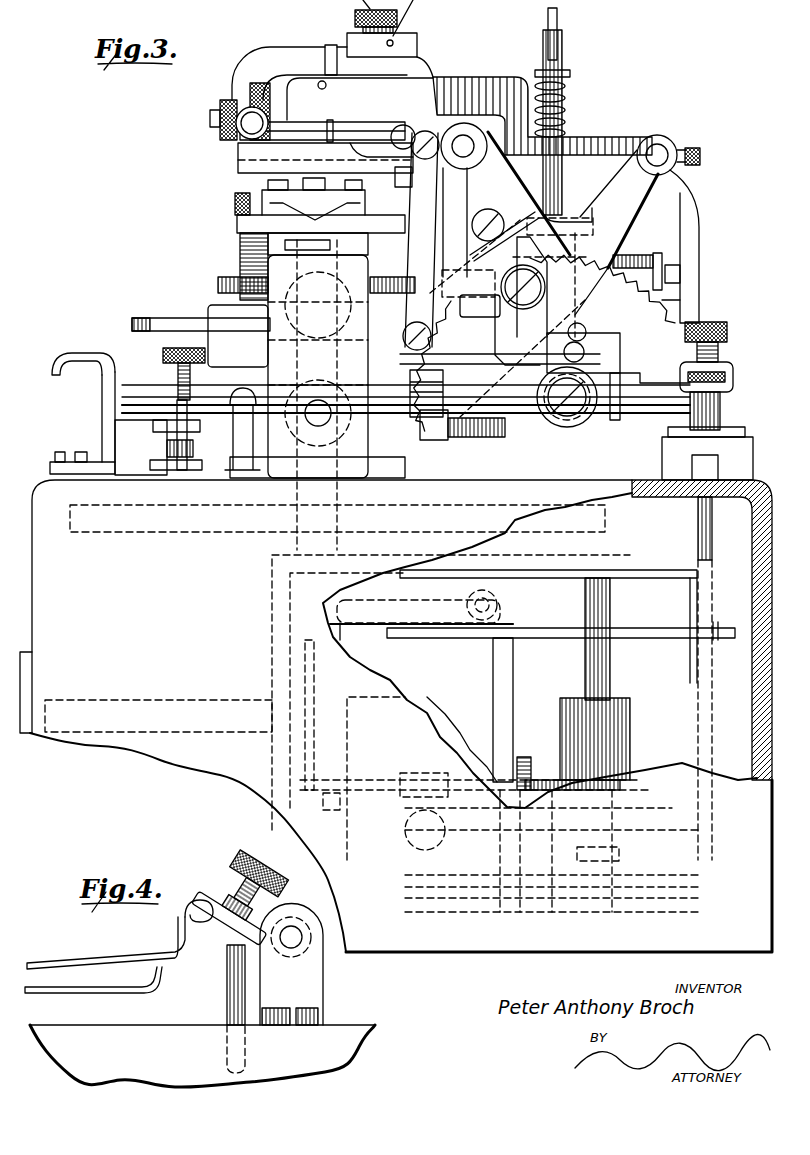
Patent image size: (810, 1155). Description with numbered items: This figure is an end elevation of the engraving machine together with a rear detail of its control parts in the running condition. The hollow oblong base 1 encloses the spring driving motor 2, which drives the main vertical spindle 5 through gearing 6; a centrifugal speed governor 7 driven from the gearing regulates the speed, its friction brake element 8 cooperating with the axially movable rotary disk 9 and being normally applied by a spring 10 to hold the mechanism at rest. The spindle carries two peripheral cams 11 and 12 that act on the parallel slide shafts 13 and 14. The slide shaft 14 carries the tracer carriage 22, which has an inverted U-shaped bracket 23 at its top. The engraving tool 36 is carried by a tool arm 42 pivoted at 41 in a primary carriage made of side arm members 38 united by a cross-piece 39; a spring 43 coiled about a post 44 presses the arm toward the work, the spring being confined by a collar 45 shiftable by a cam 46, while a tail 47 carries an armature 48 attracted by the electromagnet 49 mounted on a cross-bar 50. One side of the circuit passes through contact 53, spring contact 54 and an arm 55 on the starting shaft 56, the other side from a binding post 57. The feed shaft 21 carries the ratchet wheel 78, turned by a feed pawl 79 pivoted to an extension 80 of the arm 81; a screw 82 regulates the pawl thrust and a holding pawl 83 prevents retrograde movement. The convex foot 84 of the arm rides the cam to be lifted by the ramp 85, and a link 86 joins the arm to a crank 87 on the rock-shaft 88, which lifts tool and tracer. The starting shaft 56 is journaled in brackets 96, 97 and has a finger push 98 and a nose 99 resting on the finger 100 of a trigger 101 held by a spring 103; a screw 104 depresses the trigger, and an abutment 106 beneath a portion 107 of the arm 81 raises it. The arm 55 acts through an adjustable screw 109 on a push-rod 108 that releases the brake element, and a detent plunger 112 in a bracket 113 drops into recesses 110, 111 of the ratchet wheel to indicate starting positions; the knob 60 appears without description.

In FIG. 3, the hollow oblong base 1 is at (515, 953).
In FIG. 4, the hollow oblong base 1 is at (78, 1030).
In FIG. 3, the spring driving motor 2 is at (615, 742).
In FIG. 3, the main vertical spindle 5 is at (292, 498).
In FIG. 3, the gearing 6 is at (562, 572).
In FIG. 3, the centrifugal speed governor 7 is at (412, 840).
In FIG. 3, the friction brake element 8 is at (505, 760).
In FIG. 3, the axially movable rotary disk 9 is at (524, 758).
In FIG. 3, the spring 10 is at (382, 603).
In FIG. 3, the peripheral cam 11 is at (148, 318).
In FIG. 3, the peripheral cam 12 is at (490, 440).
In FIG. 3, the slide shaft 13 is at (240, 270).
In FIG. 3, the slide shaft 14 is at (318, 490).
In FIG. 3, the feed shaft 21 is at (568, 428).
In FIG. 3, the tracer carriage 22 is at (410, 196).
In FIG. 3, the inverted U-shaped bracket 23 is at (278, 48).
In FIG. 3, the engraving or cutting tool 36 is at (345, 122).
In FIG. 3, the side arm members 38 is at (660, 222).
In FIG. 3, the cross-piece 39 is at (592, 228).
In FIG. 3, the pivot of tool arm 41 is at (660, 145).
In FIG. 3, the tool arm 42 is at (452, 78).
In FIG. 3, the spring 43 is at (565, 96).
In FIG. 3, the post 44 is at (562, 55).
In FIG. 3, the collar 45 is at (540, 70).
In FIG. 3, the cam 46 is at (546, 38).
In FIG. 3, the tail 47 is at (700, 248).
In FIG. 3, the armature 48 is at (682, 284).
In FIG. 3, the electromagnet 49 is at (640, 256).
In FIG. 3, the cross-bar 50 is at (480, 307).
In FIG. 4, the contact 53 is at (143, 987).
In FIG. 3, the spring contact 54 is at (722, 422).
In FIG. 4, the spring contact 54 is at (126, 952).
In FIG. 3, the arm 55 is at (733, 378).
In FIG. 4, the arm 55 is at (205, 898).
In FIG. 3, the starting shaft 56 is at (655, 404).
In FIG. 4, the starting shaft 56 is at (300, 940).
In FIG. 3, the binding post 57 is at (695, 430).
In FIG. 3, the knob 60 is at (405, 47).
In FIG. 3, the ratchet wheel 78 is at (682, 304).
In FIG. 3, the feed pawl 79 is at (493, 259).
In FIG. 3, the upward extension 80 is at (521, 301).
In FIG. 3, the arm 81 is at (500, 318).
In FIG. 3, the screw 82 is at (436, 250).
In FIG. 3, the holding pawl 83 is at (505, 200).
In FIG. 3, the convex foot 84 is at (272, 365).
In FIG. 3, the ramp or face cam 85 is at (240, 402).
In FIG. 3, the link 86 is at (421, 241).
In FIG. 3, the crank 87 is at (425, 131).
In FIG. 3, the rock-shaft 88 is at (468, 158).
In FIG. 3, the bracket 96 is at (102, 435).
In FIG. 4, the bracket 97 is at (310, 988).
In FIG. 3, the finger push 98 is at (72, 353).
In FIG. 3, the nose 99 is at (153, 440).
In FIG. 3, the finger 100 is at (163, 455).
In FIG. 3, the trigger 101 is at (172, 470).
In FIG. 3, the spring 103 is at (181, 470).
In FIG. 3, the screw 104 is at (178, 366).
In FIG. 3, the abutment 106 is at (445, 437).
In FIG. 3, the portion of the arm 107 is at (412, 393).
In FIG. 3, the push-rod 108 is at (698, 520).
In FIG. 4, the push-rod 108 is at (227, 975).
In FIG. 3, the adjustable screw 109 is at (727, 336).
In FIG. 4, the adjustable screw 109 is at (236, 864).
In FIG. 3, the recess 110 is at (586, 326).
In FIG. 3, the recess 111 is at (628, 376).
In FIG. 3, the detent plunger 112 is at (586, 352).
In FIG. 3, the bracket 113 is at (600, 336).